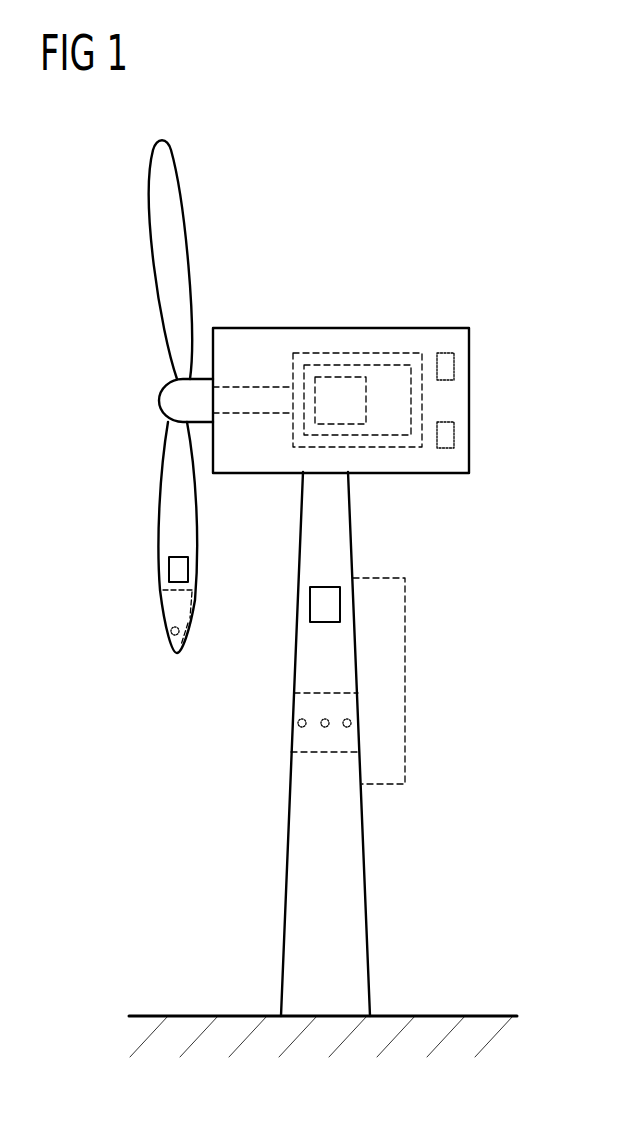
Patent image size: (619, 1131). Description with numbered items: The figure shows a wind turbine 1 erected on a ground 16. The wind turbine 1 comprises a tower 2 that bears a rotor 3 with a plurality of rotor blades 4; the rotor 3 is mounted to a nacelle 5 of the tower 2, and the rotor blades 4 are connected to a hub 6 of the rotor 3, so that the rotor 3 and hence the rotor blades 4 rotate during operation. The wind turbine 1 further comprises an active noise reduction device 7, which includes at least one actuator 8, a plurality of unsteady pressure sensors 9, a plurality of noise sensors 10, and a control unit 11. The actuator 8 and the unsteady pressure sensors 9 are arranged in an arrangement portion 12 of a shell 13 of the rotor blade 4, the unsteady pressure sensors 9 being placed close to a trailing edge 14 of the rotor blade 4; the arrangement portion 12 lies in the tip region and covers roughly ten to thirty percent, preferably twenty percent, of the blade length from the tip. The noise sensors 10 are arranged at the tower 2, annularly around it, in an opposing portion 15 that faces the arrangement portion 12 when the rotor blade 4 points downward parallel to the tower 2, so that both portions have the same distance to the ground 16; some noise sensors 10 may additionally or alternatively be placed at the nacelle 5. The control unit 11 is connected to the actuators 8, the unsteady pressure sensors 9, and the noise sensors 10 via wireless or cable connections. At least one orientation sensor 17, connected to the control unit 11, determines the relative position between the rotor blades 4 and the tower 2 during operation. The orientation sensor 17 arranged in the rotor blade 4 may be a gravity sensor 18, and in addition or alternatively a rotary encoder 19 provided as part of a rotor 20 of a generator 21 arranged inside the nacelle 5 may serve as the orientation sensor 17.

The wind turbine 1 is at (450, 160).
The tower 2 is at (366, 910).
The rotor 3 is at (128, 367).
The rotor blade 4 is at (191, 212).
The nacelle 5 is at (470, 437).
The hub 6 is at (167, 398).
The active noise reduction device 7 is at (405, 680).
The actuator 8 is at (170, 633).
The unsteady pressure sensor 9 is at (195, 604).
The noise sensor 10 is at (445, 353).
The control unit 11 is at (310, 605).
The arrangement portion 12 is at (158, 606).
The shell 13 is at (200, 517).
The trailing edge 14 is at (187, 640).
The opposing portion 15 is at (310, 753).
The ground 16 is at (188, 1016).
The orientation sensor 17 is at (207, 423).
The gravity sensor 18 is at (169, 568).
The rotary encoder 19 is at (330, 377).
The rotor of generator 20 is at (392, 365).
The generator 21 is at (422, 400).